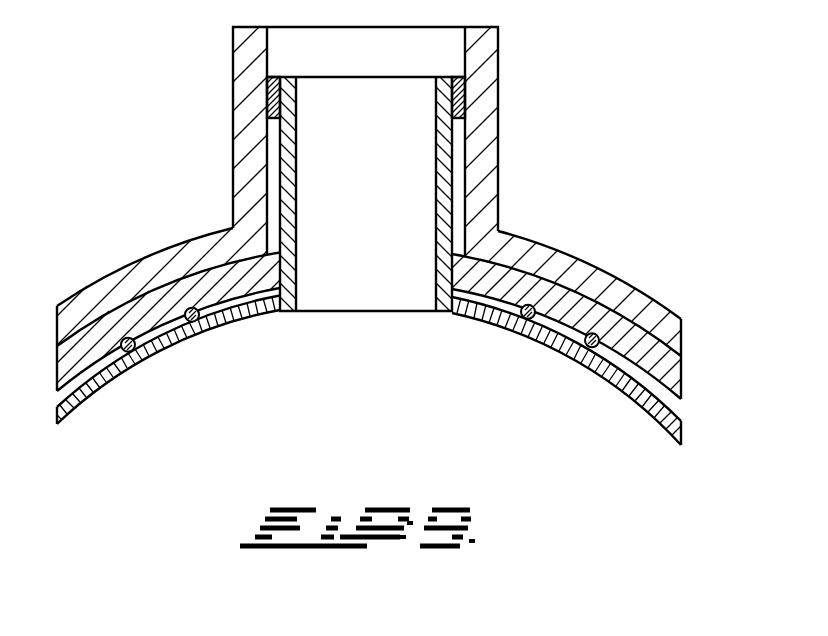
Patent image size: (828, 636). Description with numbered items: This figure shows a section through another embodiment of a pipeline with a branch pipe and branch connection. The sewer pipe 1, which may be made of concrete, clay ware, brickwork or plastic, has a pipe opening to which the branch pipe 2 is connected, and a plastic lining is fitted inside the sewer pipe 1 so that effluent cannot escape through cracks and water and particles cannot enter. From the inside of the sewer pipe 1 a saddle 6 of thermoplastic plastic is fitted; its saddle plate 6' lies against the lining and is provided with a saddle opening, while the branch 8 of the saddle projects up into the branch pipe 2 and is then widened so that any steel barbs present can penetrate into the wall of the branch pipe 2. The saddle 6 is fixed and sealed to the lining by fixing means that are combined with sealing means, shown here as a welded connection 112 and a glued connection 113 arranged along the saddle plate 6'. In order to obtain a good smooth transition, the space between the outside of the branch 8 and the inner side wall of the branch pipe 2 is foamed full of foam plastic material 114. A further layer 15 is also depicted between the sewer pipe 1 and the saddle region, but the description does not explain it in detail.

The sewer pipe 1 is at (160, 274).
The branch pipe 2 is at (492, 80).
The branch 8 is at (292, 148).
The intermediate layer 15 is at (230, 236).
The saddle 6 is at (566, 387).
The saddle plate 6' is at (180, 360).
The welded connection 112 is at (194, 323).
The glued connection 113 is at (130, 353).
The foam plastic material 114 is at (268, 94).